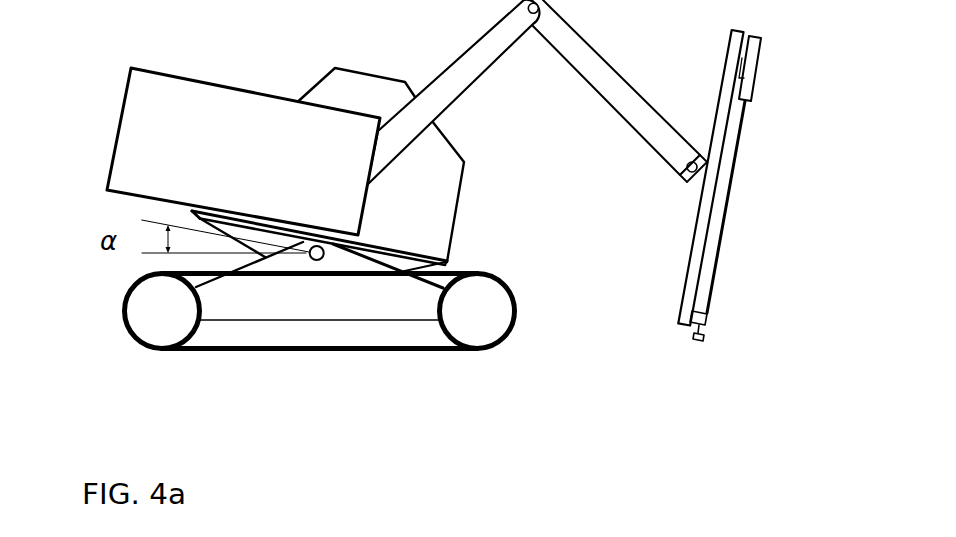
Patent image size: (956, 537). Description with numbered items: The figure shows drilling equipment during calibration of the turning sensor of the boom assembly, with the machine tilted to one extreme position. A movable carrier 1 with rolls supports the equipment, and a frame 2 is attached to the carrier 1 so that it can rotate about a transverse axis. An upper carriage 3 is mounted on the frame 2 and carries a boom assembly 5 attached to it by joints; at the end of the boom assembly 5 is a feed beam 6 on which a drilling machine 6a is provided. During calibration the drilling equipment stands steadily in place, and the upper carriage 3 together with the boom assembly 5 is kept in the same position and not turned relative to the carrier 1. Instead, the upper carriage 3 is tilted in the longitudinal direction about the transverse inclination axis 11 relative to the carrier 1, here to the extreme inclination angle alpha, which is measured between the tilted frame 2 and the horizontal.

The carrier 1 is at (95, 302).
The frame 2 is at (441, 263).
The upper carriage 3 is at (476, 181).
The boom assembly 5 is at (441, 47).
The feed beam 6 is at (697, 229).
The drilling machine 6a is at (752, 72).
The transverse inclination axis 11 is at (315, 260).